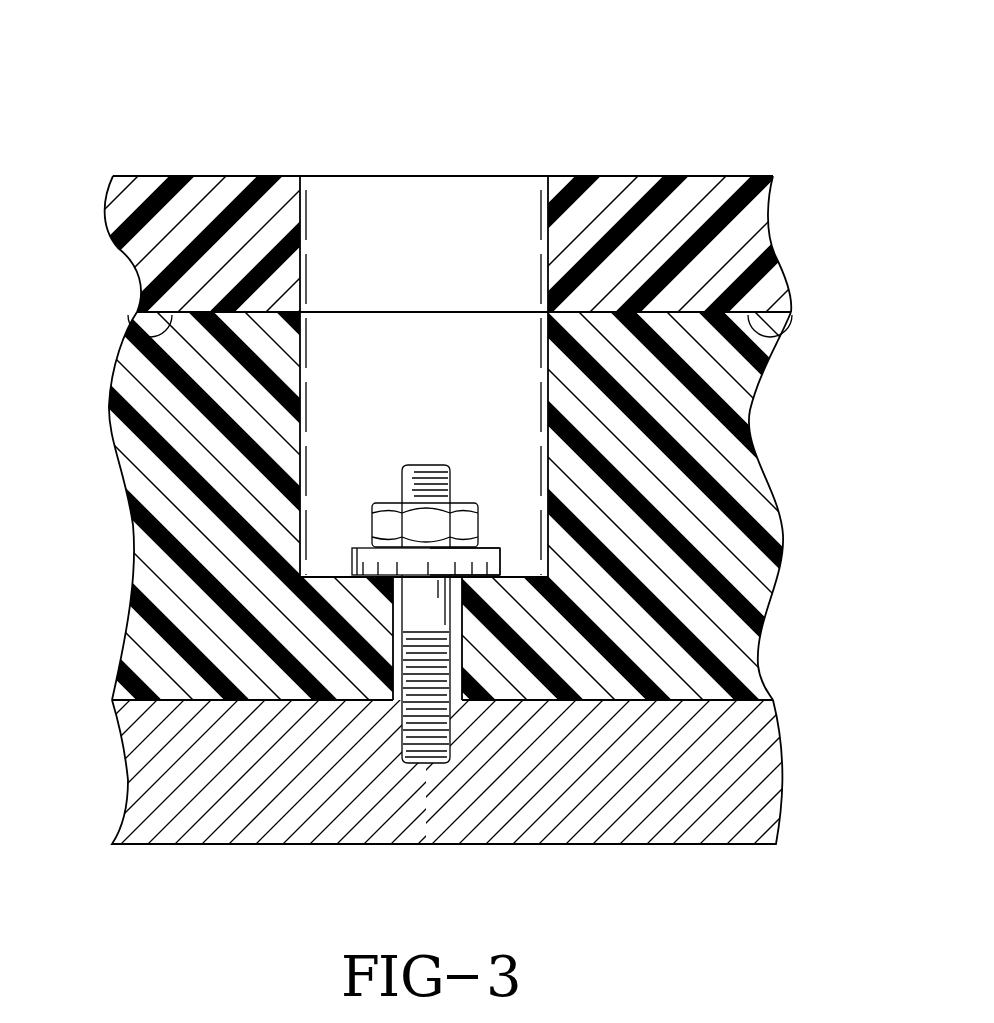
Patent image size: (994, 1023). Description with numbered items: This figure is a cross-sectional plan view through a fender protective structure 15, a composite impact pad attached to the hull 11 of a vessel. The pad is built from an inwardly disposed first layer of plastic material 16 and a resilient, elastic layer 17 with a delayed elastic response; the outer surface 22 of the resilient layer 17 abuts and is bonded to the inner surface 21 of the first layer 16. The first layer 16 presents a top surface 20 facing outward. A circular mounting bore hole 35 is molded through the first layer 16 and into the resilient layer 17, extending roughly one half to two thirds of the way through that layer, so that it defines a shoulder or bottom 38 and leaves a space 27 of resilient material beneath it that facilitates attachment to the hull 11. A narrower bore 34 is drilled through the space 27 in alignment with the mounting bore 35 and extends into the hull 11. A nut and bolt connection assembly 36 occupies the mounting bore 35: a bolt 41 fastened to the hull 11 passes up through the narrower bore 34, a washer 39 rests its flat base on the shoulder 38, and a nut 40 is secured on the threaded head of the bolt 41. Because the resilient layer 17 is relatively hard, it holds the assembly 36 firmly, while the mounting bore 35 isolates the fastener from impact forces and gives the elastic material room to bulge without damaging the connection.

The fender protective structure 15 is at (180, 103).
The top surface 20 is at (710, 175).
The first layer of plastic material 16 is at (750, 219).
The outer surface 22 is at (747, 300).
The inner surface 21 is at (137, 337).
The mounting bore hole 35 is at (548, 212).
The resilient layer 17 is at (720, 438).
The nut and bolt connection assembly 36 is at (410, 442).
The nut 40 is at (385, 513).
The bolt 41 is at (431, 468).
The washer 39 is at (352, 565).
The shoulder 38 is at (521, 565).
The narrower bore 34 is at (397, 636).
The space 27 is at (492, 637).
The hull 11 is at (640, 822).